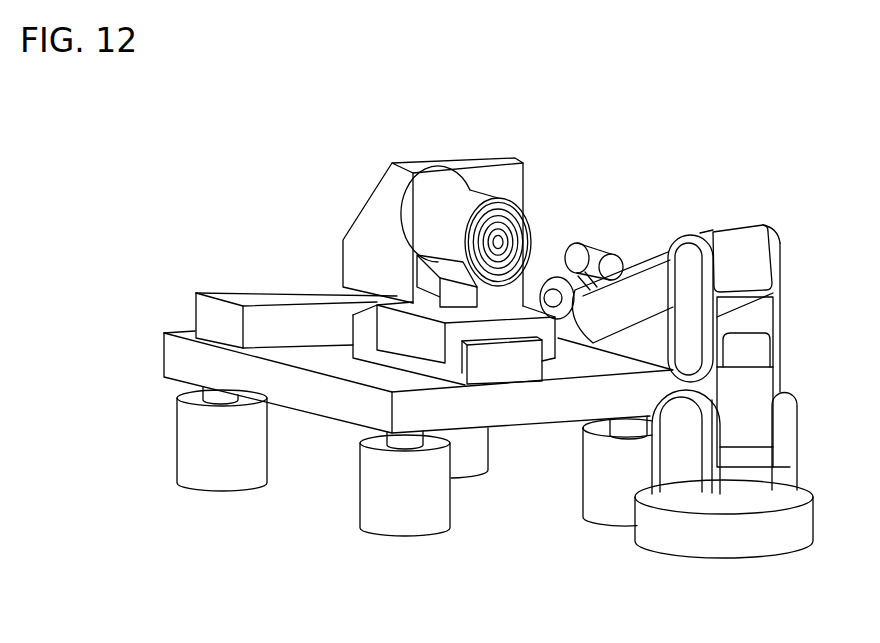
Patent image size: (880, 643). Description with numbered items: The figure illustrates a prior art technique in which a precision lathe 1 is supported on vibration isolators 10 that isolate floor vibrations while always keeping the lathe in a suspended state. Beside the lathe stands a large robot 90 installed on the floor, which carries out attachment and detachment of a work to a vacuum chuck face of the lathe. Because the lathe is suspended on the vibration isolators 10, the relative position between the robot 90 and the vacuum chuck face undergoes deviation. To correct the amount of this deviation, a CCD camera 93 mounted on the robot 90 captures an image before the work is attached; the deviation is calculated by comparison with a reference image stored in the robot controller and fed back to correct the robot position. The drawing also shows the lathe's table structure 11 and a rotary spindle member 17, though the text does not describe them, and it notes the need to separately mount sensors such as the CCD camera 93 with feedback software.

The precision lathe 1 is at (285, 178).
The vibration isolators 10 is at (383, 540).
The table / base plate 11 is at (173, 357).
The drum (rotary member) 17 is at (520, 234).
The large robot 90 is at (737, 228).
The CCD camera 93 is at (607, 250).